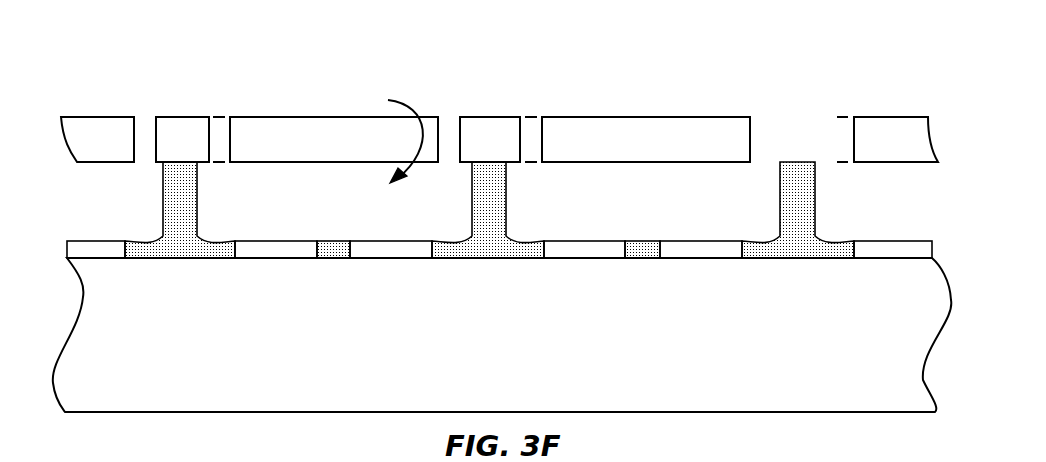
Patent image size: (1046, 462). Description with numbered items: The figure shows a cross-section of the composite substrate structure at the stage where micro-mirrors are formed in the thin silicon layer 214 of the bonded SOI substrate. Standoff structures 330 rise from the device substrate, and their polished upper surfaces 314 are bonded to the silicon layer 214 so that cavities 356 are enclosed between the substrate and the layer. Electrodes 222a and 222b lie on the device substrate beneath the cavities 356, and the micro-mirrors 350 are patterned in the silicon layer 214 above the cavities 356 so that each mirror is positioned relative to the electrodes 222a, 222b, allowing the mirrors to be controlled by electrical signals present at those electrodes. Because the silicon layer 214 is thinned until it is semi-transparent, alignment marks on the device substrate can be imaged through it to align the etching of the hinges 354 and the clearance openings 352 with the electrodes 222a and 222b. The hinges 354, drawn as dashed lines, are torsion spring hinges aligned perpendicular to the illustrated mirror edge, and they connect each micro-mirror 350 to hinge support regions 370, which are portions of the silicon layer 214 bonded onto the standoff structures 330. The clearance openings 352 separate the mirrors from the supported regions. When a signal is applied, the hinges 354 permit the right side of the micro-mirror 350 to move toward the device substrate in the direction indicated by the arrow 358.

The hinge support region 370 is at (176, 127).
The hinge 354 is at (221, 130).
The arrow 358 is at (413, 102).
The clearance opening 352 is at (449, 125).
The micro-mirror 350 is at (640, 133).
The silicon layer 214 is at (896, 139).
The upper surface of standoff structure 314 is at (177, 163).
The cavity 356 is at (486, 200).
The standoff structure 330 is at (798, 203).
The electrode 222a is at (275, 248).
The electrode 222b is at (390, 248).